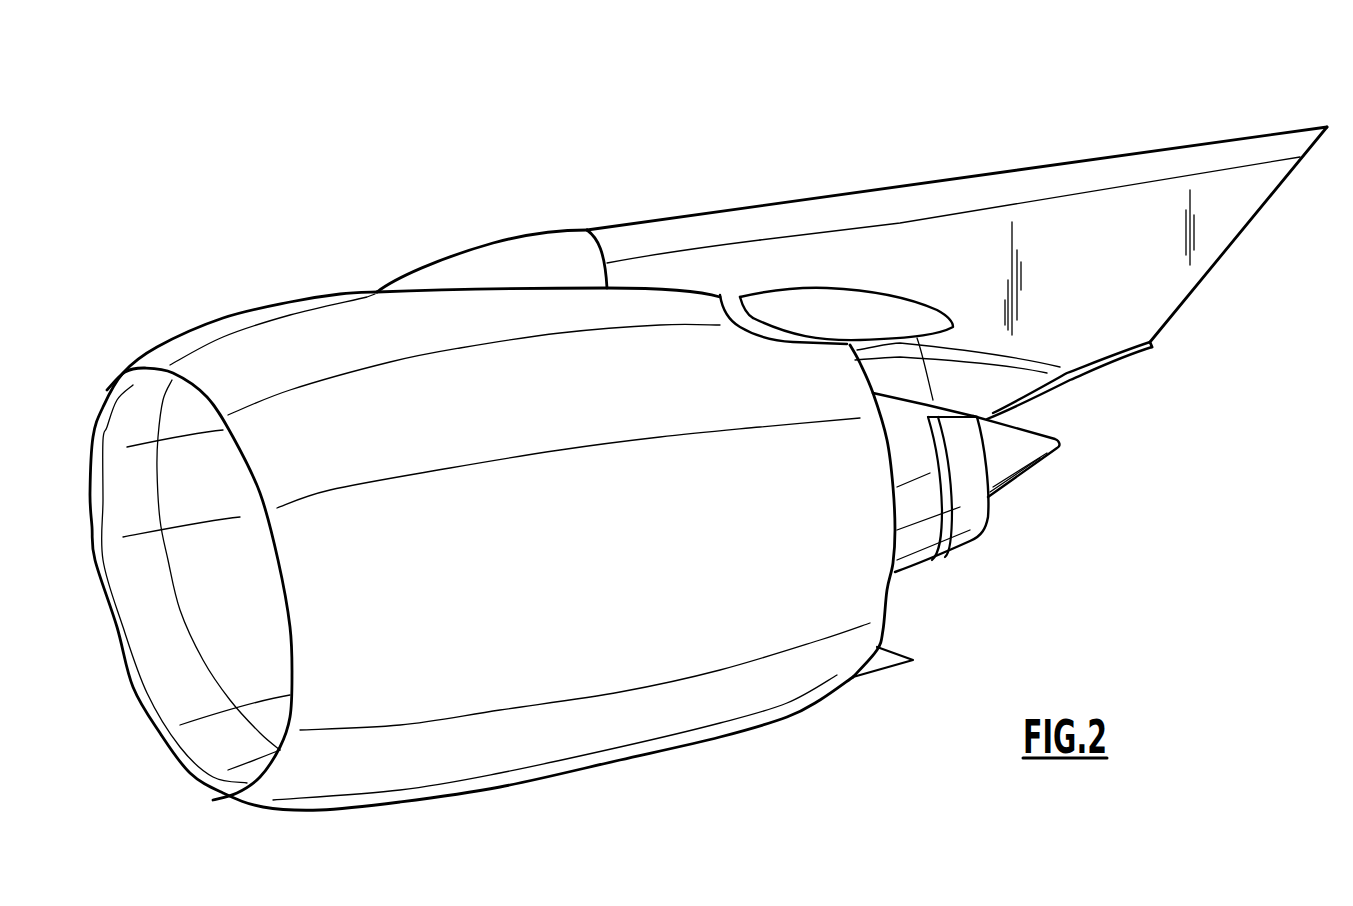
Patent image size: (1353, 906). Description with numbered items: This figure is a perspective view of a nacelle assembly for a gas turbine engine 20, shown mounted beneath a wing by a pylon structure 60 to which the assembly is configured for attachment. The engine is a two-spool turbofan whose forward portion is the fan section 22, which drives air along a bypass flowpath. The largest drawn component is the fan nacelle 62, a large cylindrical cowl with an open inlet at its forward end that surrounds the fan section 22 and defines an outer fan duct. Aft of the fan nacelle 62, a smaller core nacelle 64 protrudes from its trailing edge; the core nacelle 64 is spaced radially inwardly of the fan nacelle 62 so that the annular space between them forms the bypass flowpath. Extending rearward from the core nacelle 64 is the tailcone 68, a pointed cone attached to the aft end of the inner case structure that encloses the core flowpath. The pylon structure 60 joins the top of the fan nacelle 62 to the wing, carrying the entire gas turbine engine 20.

The gas turbine engine 20 is at (743, 108).
The fan section 22 is at (208, 304).
The pylon structure 60 is at (967, 175).
The fan nacelle 62 is at (302, 327).
The core nacelle 64 is at (910, 567).
The tailcone 68 is at (1057, 440).